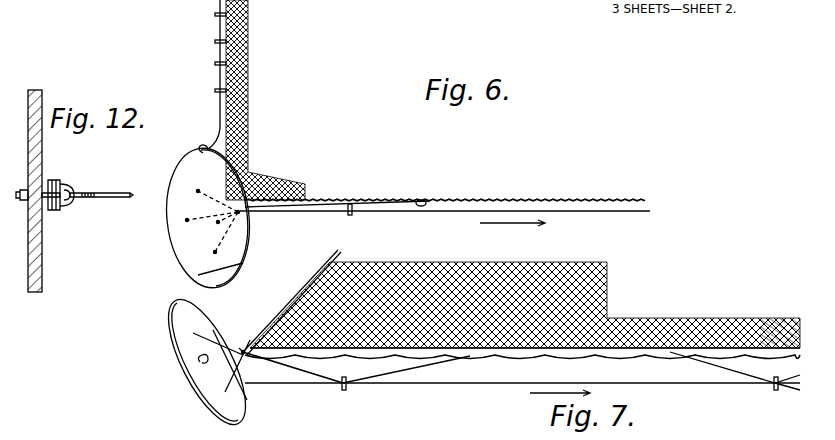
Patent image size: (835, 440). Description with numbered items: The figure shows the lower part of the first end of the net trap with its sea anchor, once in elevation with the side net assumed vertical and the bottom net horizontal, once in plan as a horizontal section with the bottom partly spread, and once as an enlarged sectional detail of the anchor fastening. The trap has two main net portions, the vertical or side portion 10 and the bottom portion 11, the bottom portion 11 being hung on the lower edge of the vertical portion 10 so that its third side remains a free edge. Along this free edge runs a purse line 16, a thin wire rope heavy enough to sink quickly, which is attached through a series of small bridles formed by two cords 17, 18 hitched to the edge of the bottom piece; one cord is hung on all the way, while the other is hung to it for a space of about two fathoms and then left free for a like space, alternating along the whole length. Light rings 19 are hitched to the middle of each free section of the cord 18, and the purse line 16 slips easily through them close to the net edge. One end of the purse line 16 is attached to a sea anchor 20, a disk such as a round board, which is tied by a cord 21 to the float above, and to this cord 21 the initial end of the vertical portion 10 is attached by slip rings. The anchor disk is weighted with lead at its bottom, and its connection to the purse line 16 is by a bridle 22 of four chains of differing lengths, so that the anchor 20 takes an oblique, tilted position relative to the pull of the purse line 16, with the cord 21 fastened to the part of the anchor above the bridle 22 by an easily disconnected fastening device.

In FIG. 6, the vertical or side portion 10 is at (250, 122).
In FIG. 7, the vertical or side portion 10 is at (296, 298).
In FIG. 6, the bottom portion 11 is at (382, 199).
In FIG. 7, the bottom portion 11 is at (602, 299).
In FIG. 6, the purse line 16 is at (575, 212).
In FIG. 7, the purse line 16 is at (496, 384).
In FIG. 6, the cord 17 is at (408, 201).
In FIG. 7, the cord 17 is at (362, 357).
In FIG. 6, the cord 18 is at (428, 201).
In FIG. 7, the cord 18 is at (420, 368).
In FIG. 7, the light rings 19 is at (345, 390).
In FIG. 12, the sea anchor 20 is at (43, 248).
In FIG. 6, the sea anchor 20 is at (176, 242).
In FIG. 7, the sea anchor 20 is at (178, 350).
In FIG. 12, the cord 21 is at (114, 194).
In FIG. 6, the cord 21 is at (220, 118).
In FIG. 6, the bridle 22 is at (218, 230).
In FIG. 7, the bridle 22 is at (241, 349).